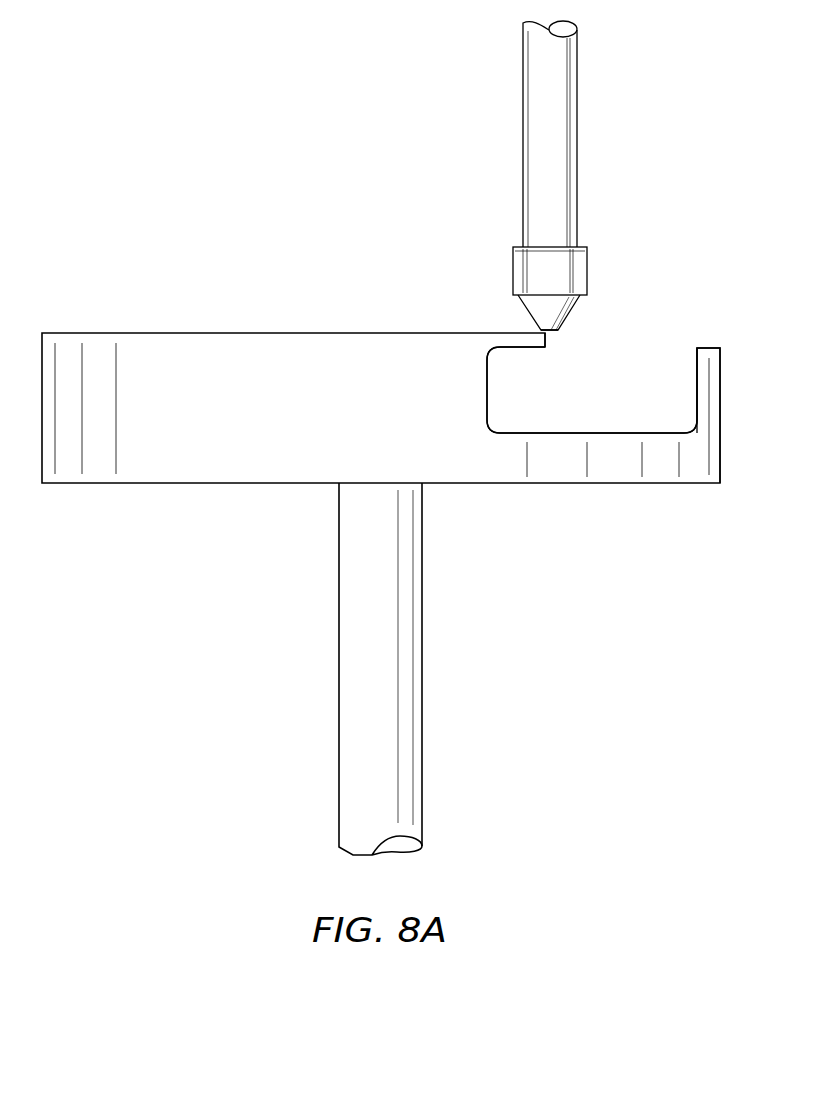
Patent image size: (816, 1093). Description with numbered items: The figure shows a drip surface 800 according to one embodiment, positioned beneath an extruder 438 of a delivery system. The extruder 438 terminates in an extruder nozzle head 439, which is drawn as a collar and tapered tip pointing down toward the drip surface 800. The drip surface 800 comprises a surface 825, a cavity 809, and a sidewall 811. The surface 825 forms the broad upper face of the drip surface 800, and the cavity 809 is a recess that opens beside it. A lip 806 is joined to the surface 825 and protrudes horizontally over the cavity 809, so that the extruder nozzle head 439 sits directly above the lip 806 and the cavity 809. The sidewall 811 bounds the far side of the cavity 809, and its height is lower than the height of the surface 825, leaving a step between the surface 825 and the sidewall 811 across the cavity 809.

The drip surface 800 is at (324, 170).
The extruder 438 is at (577, 173).
The extruder nozzle head 439 is at (587, 260).
The surface 825 is at (245, 333).
The cavity 809 is at (552, 408).
The sidewall 811 is at (711, 348).
The lip 806 is at (546, 337).